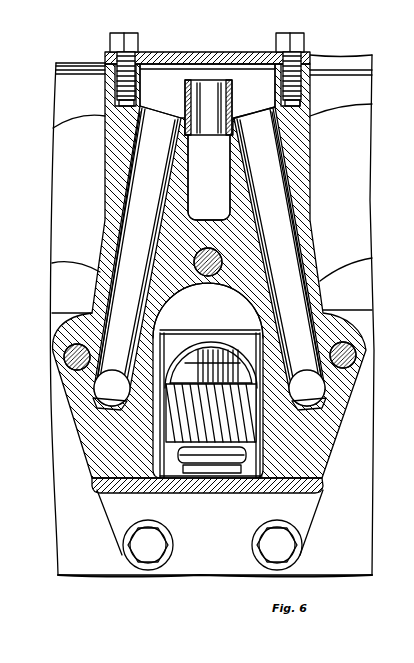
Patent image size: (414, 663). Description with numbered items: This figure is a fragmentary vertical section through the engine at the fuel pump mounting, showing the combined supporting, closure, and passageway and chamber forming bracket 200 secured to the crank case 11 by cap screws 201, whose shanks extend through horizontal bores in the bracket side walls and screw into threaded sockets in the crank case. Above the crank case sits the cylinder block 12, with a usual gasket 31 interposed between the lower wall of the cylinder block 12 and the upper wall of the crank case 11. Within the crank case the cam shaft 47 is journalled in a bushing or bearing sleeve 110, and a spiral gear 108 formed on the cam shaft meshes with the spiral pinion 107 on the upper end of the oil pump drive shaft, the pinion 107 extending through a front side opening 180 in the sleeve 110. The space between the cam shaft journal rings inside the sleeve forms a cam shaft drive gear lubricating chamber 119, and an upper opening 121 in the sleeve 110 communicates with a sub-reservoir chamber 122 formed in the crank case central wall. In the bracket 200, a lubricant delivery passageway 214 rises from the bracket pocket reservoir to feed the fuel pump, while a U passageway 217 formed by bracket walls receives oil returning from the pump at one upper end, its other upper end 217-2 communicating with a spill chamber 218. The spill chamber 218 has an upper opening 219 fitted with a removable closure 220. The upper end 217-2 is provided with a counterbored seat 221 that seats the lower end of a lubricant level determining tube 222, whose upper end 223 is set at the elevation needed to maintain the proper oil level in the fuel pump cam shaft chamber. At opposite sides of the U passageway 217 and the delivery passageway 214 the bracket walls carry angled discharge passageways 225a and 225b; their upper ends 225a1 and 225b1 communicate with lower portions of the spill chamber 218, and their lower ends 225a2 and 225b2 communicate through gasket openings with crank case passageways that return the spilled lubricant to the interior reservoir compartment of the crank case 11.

The crank case 11 is at (53, 390).
The cylinder block 12 is at (58, 63).
The gasket 31 is at (82, 72).
The cam shaft 47 is at (236, 374).
The spiral pinion 107 is at (163, 490).
The spiral gear 108 is at (222, 337).
The bearing sleeve 110 is at (164, 330).
The cam shaft drive gear lubricating chamber 119 is at (180, 340).
The upper opening 121 is at (217, 372).
The sub-reservoir chamber 122 is at (211, 335).
The front side opening 180 is at (240, 352).
The bracket 200 is at (322, 307).
The cap screws 201 is at (222, 262).
The lubricant delivery passageway 214 is at (180, 278).
The U passageway 217 is at (209, 177).
The upper end of U passageway 217-2 is at (190, 137).
The spill chamber 218 is at (207, 85).
The upper opening 219 is at (178, 38).
The removable closure 220 is at (247, 52).
The counterbored seat 221 is at (160, 107).
The lubricant level determining tube 222 is at (233, 100).
The upper end of tube 223 is at (250, 62).
The angled discharge passageway 225a is at (138, 225).
The upper end of discharge passageway 225a1 is at (147, 127).
The lower end of discharge passageway 225a2 is at (112, 402).
The angled discharge passageway 225b is at (270, 167).
The upper end of discharge passageway 225b1 is at (274, 137).
The lower end of discharge passageway 225b2 is at (306, 404).